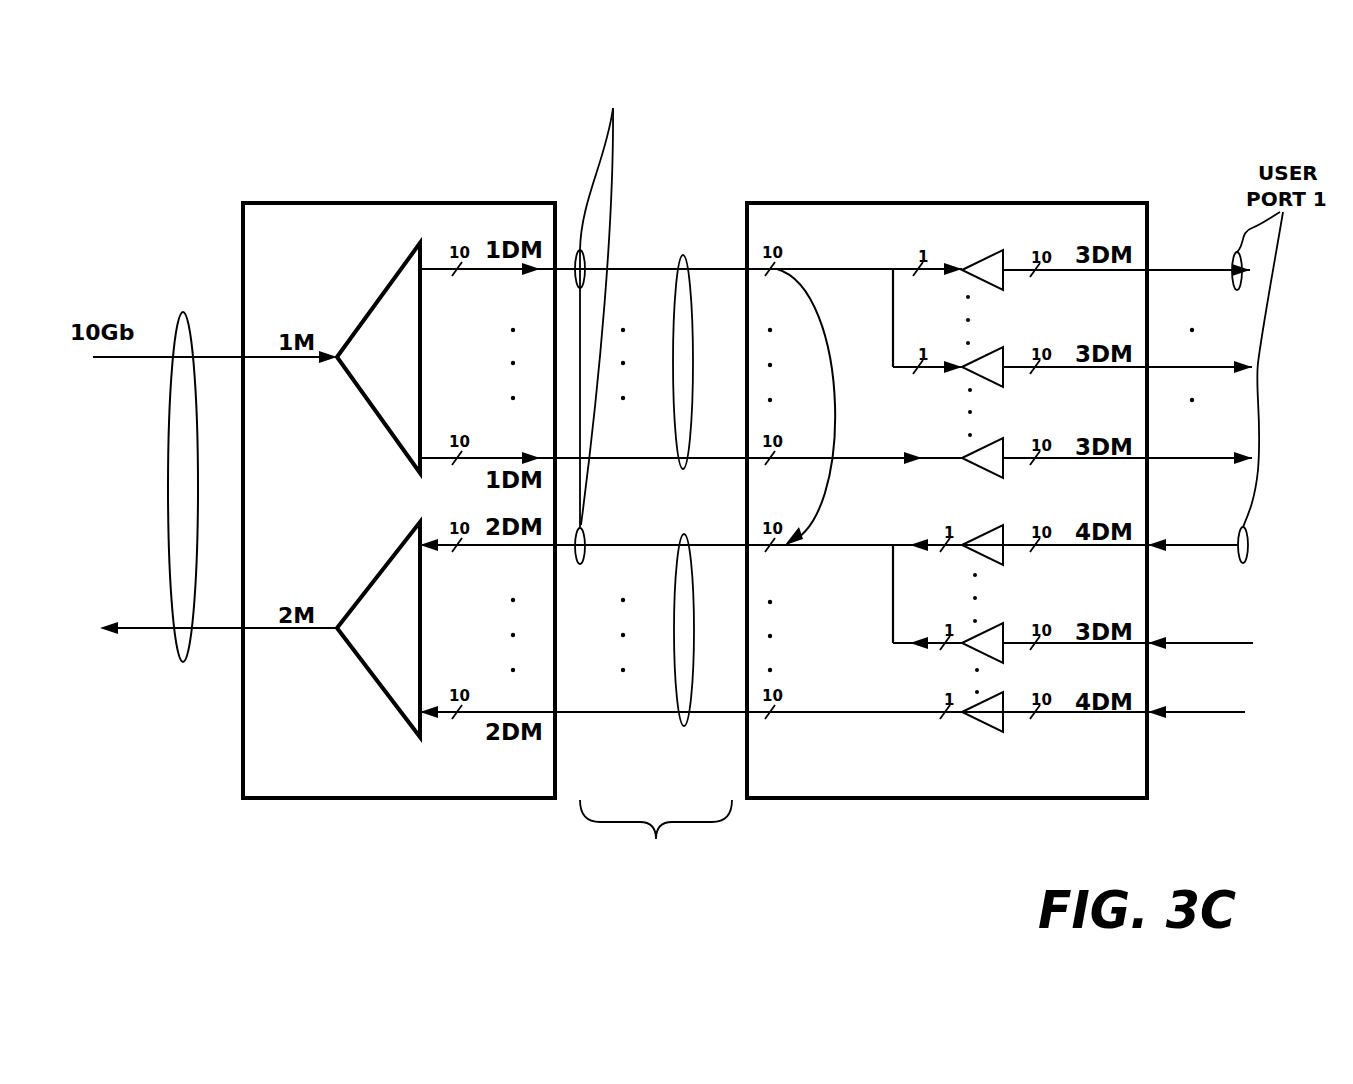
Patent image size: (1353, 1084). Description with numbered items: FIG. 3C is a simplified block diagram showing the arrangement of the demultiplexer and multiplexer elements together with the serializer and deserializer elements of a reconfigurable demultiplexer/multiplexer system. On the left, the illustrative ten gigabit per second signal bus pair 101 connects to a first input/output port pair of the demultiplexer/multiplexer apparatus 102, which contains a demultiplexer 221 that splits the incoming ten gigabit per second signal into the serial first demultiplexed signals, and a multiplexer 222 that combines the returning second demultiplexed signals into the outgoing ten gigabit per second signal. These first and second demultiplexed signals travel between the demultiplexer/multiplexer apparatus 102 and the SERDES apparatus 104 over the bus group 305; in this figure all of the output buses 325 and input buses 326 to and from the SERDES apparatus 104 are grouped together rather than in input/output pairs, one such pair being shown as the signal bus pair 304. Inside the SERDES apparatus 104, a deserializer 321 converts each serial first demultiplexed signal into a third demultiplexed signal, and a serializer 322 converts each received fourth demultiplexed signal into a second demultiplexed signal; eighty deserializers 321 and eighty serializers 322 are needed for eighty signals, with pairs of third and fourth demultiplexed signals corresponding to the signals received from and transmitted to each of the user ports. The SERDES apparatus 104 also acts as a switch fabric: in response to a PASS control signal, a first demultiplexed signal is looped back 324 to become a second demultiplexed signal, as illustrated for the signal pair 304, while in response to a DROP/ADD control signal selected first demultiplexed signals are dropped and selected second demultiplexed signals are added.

The 10 Gb/s signal bus pair 101 is at (183, 662).
The demultiplexer/multiplexer apparatus 102 is at (380, 203).
The SERDES apparatus 104 is at (925, 203).
The demultiplexer 221 is at (368, 314).
The multiplexer 222 is at (368, 588).
The 1.25 Gb/s signal bus pair 304 is at (613, 322).
The bus group 305 is at (656, 842).
The deserializer 321 is at (1004, 258).
The serializer 322 is at (1004, 534).
The loop-back 324 is at (838, 430).
The output buses 325 is at (683, 255).
The input buses 326 is at (684, 726).